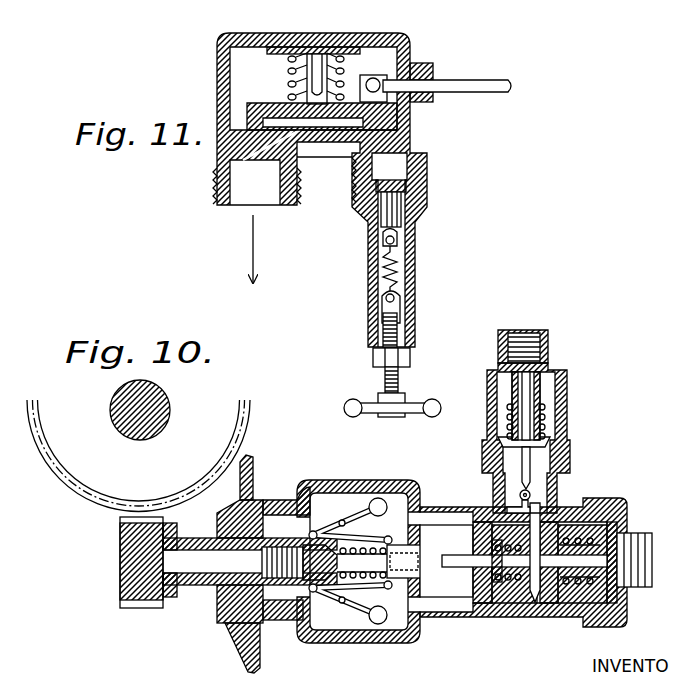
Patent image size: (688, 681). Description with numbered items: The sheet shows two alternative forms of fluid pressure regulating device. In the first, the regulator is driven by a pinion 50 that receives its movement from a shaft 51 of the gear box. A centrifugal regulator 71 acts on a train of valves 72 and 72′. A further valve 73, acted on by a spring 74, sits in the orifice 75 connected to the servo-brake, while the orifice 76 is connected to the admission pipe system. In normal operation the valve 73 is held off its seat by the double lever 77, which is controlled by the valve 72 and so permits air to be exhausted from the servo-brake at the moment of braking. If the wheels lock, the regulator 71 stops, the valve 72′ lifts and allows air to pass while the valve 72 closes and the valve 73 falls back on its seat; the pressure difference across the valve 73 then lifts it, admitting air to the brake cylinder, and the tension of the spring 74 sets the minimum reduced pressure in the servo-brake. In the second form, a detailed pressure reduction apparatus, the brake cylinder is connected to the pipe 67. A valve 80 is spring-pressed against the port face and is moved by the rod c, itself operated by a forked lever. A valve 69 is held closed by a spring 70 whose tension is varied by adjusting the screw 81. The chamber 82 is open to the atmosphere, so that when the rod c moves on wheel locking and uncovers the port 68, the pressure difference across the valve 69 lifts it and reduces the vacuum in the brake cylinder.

In FIG. 10, the pinion 50 is at (136, 575).
In FIG. 10, the shaft 51 is at (128, 426).
In FIG. 11, the pipe 67 is at (232, 249).
In FIG. 11, the port 68 is at (392, 149).
In FIG. 11, the valve 69 is at (402, 196).
In FIG. 11, the spring 70 is at (400, 270).
In FIG. 10, the centrifugal regulator 71 is at (327, 592).
In FIG. 10, the valve 72 is at (536, 573).
In FIG. 10, the valve 72' is at (490, 592).
In FIG. 10, the valve 73 is at (546, 447).
In FIG. 10, the spring 74 is at (545, 418).
In FIG. 10, the orifice 75 is at (524, 345).
In FIG. 10, the orifice 76 is at (636, 540).
In FIG. 10, the double lever 77 is at (531, 510).
In FIG. 11, the valve 80 is at (243, 108).
In FIG. 11, the screw 81 is at (386, 383).
In FIG. 11, the chamber 82 is at (383, 288).
In FIG. 11, the rod c is at (488, 92).